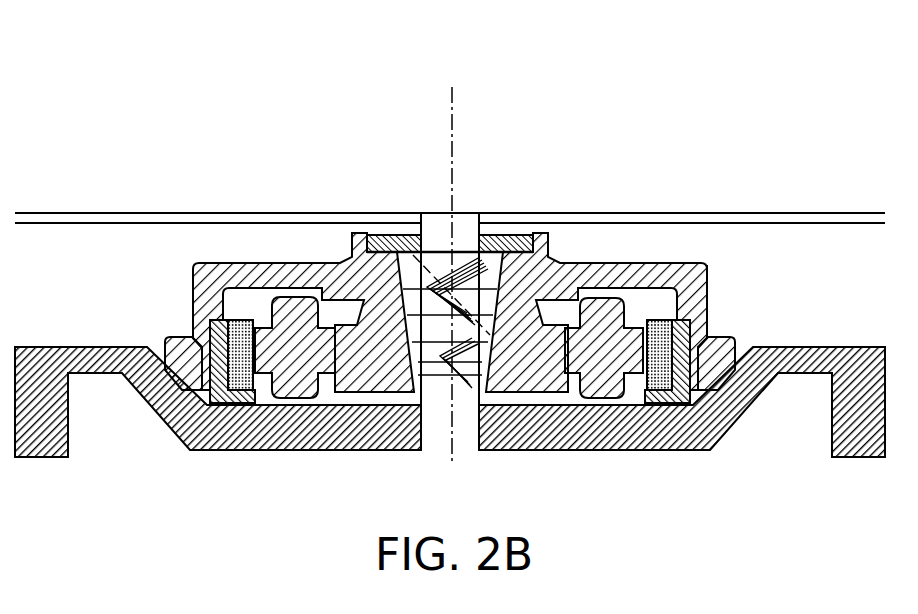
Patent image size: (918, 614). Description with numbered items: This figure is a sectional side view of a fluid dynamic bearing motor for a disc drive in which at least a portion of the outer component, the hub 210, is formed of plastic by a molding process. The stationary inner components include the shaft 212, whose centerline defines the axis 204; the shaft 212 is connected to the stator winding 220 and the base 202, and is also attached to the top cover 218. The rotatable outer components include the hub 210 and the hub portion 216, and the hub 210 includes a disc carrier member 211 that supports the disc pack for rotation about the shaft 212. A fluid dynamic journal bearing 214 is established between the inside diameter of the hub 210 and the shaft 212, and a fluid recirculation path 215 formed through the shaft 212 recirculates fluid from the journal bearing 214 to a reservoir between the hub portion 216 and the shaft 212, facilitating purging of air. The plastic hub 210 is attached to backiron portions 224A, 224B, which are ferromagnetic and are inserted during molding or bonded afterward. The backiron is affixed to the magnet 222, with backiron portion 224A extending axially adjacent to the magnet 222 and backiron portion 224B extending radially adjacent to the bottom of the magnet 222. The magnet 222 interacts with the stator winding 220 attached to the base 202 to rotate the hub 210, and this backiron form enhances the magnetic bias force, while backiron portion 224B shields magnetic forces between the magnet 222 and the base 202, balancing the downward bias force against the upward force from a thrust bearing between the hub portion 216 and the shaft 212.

The base 202 is at (262, 449).
The axis 204 is at (453, 118).
The hub 210 is at (562, 263).
The disc carrier member 211 is at (733, 337).
The shaft 212 is at (395, 240).
The journal bearing 214 is at (478, 213).
The fluid recirculation path 215 is at (425, 213).
The hub portion 216 is at (506, 240).
The top cover 218 is at (665, 218).
The stator winding 220 is at (586, 397).
The magnet 222 is at (707, 299).
The backiron portion 224A is at (690, 404).
The backiron portion 224B is at (659, 405).